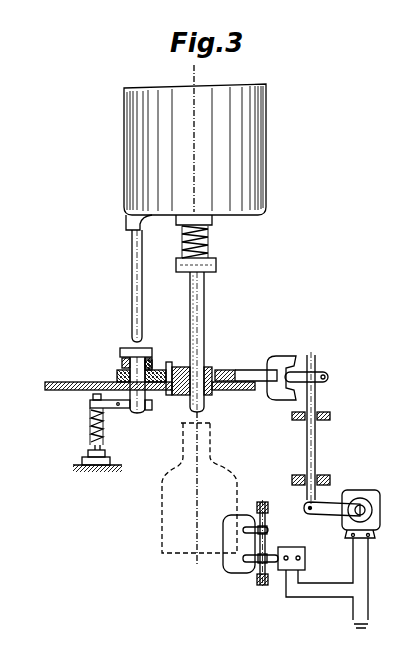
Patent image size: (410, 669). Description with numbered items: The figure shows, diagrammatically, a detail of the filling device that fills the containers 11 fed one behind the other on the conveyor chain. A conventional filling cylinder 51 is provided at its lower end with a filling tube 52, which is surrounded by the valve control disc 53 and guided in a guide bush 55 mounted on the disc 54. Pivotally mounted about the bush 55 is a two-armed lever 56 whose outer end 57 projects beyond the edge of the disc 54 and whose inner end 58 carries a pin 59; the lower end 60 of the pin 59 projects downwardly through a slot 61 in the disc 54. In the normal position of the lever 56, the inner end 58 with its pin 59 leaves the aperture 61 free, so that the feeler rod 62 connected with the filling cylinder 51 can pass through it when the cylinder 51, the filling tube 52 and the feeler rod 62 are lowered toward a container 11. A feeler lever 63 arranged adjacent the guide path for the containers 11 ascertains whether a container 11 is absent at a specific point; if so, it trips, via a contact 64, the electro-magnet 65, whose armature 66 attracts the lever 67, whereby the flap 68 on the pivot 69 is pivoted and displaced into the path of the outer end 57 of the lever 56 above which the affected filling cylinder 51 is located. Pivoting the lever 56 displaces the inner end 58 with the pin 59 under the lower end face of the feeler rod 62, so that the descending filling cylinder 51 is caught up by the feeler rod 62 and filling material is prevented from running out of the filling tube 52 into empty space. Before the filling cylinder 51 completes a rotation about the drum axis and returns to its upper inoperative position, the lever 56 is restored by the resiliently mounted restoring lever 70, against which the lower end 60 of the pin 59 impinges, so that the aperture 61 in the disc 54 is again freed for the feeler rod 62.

The container 11 is at (177, 522).
The filling cylinder 51 is at (266, 150).
The filling tube 52 is at (205, 318).
The valve control disc 53 is at (216, 268).
The disc 54 is at (85, 382).
The guide bush 55 is at (222, 369).
The two-armed lever 56 is at (167, 362).
The outer end 57 is at (282, 365).
The inner end 58 is at (157, 370).
The pin 59 is at (123, 358).
The lower end 60 is at (136, 400).
The slot 61 is at (152, 398).
The feeler rod 62 is at (132, 285).
The feeler lever 63 is at (240, 568).
The contact 64 is at (290, 556).
The electro-magnet 65 is at (350, 495).
The armature 66 is at (362, 505).
The lever 67 is at (333, 517).
The flap 68 is at (291, 371).
The pivot 69 is at (316, 398).
The restoring lever 70 is at (118, 410).